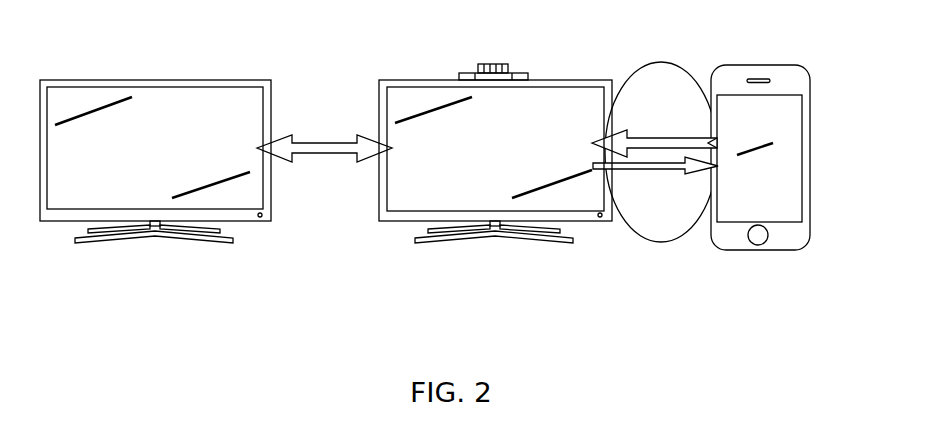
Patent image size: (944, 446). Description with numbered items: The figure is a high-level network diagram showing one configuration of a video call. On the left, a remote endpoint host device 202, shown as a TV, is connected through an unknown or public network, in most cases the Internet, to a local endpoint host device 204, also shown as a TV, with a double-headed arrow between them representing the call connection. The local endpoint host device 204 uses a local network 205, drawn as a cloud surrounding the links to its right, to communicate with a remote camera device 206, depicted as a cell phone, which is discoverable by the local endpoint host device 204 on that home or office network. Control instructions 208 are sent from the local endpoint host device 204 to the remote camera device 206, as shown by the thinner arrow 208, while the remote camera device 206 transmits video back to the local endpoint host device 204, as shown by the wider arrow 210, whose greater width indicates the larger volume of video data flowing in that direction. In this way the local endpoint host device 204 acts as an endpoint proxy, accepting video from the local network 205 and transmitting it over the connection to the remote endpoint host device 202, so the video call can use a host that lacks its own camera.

The remote endpoint host device 202 is at (102, 80).
The local endpoint host device 204 is at (398, 80).
The local network 205 is at (665, 62).
The remote camera device 206 is at (782, 252).
The control instructions 208 is at (640, 170).
The wider arrow 210 is at (637, 137).